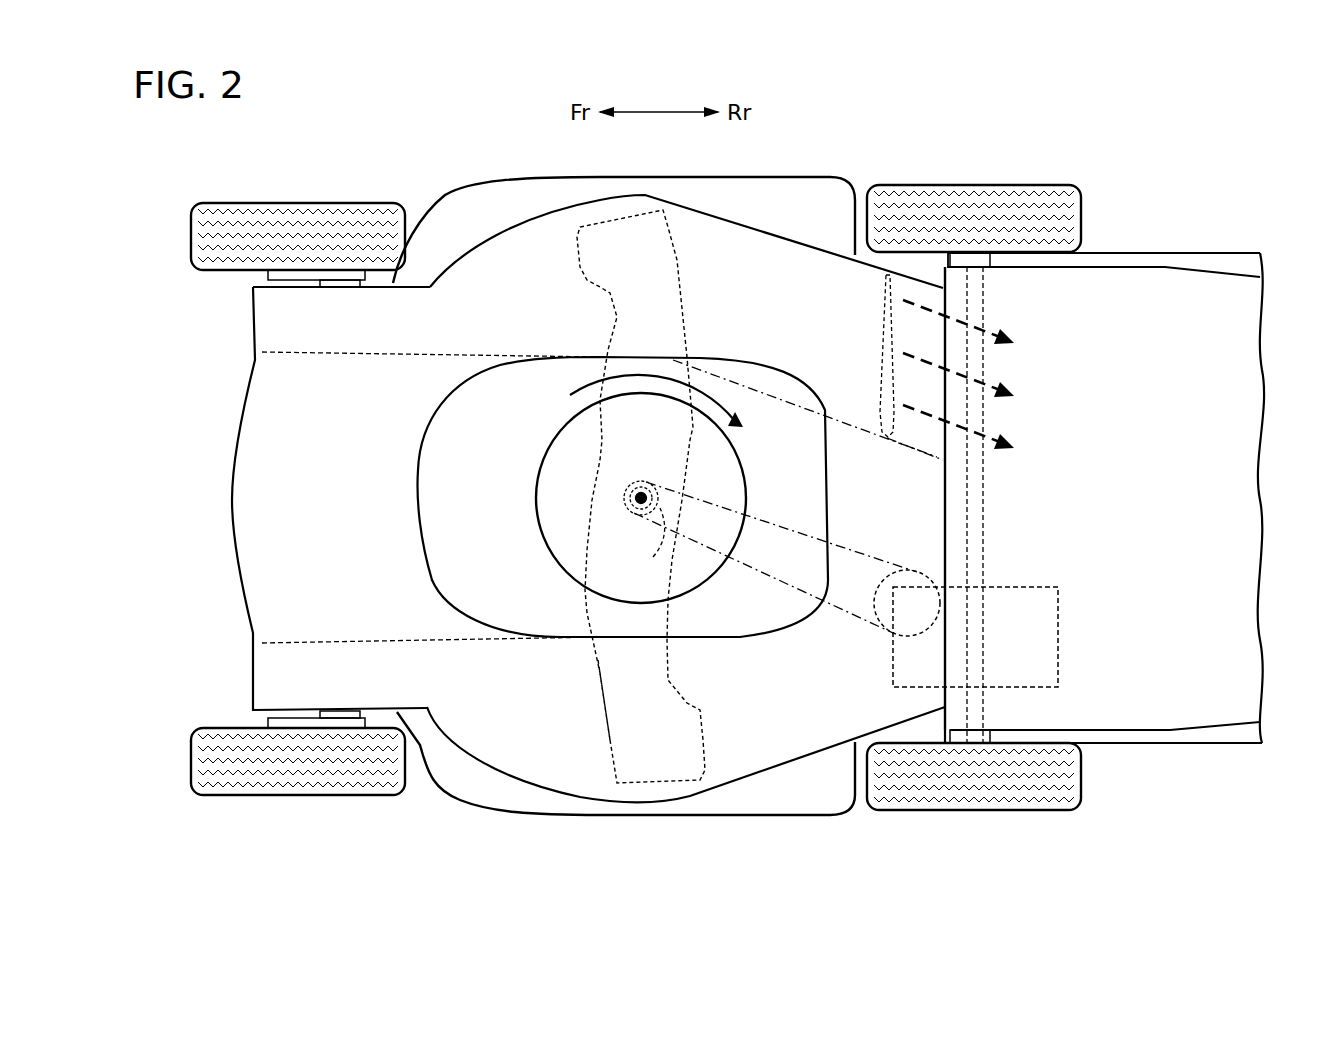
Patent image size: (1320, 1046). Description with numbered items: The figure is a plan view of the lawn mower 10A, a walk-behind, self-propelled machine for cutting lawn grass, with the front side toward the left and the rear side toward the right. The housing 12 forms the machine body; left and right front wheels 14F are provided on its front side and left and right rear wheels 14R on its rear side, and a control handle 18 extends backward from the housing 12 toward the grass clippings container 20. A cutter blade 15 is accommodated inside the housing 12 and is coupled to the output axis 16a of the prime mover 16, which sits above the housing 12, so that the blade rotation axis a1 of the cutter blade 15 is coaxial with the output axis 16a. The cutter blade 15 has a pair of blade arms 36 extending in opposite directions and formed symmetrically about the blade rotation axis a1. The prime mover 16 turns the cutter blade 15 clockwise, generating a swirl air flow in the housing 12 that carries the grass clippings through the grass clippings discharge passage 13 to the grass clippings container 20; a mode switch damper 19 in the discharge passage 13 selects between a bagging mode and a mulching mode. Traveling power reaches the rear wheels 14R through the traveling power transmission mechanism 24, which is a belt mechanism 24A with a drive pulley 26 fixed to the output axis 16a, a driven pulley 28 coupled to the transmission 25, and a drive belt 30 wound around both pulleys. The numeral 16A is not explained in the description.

The lawn mower 10A is at (366, 124).
The housing 12 is at (496, 218).
The grass clippings discharge passage 13 is at (855, 434).
The front wheels 14F is at (258, 202).
The rear wheels 14R is at (963, 186).
The cutter blade 15 is at (596, 710).
The prime mover 16 is at (530, 477).
The cutting blade rotation region 16A is at (641, 498).
The output axis 16a is at (656, 482).
The blade rotation axis a1 is at (640, 493).
The control handle 18 is at (1212, 732).
The mode switch damper 19 is at (880, 357).
The grass clippings container 20 is at (1172, 288).
The traveling power transmission mechanism 24 is at (831, 622).
The belt mechanism 24A is at (763, 573).
The transmission 25 is at (1058, 620).
The drive pulley 26 is at (646, 545).
The driven pulley 28 is at (890, 576).
The drive belt 30 is at (793, 522).
The blade arms 36 is at (612, 668).